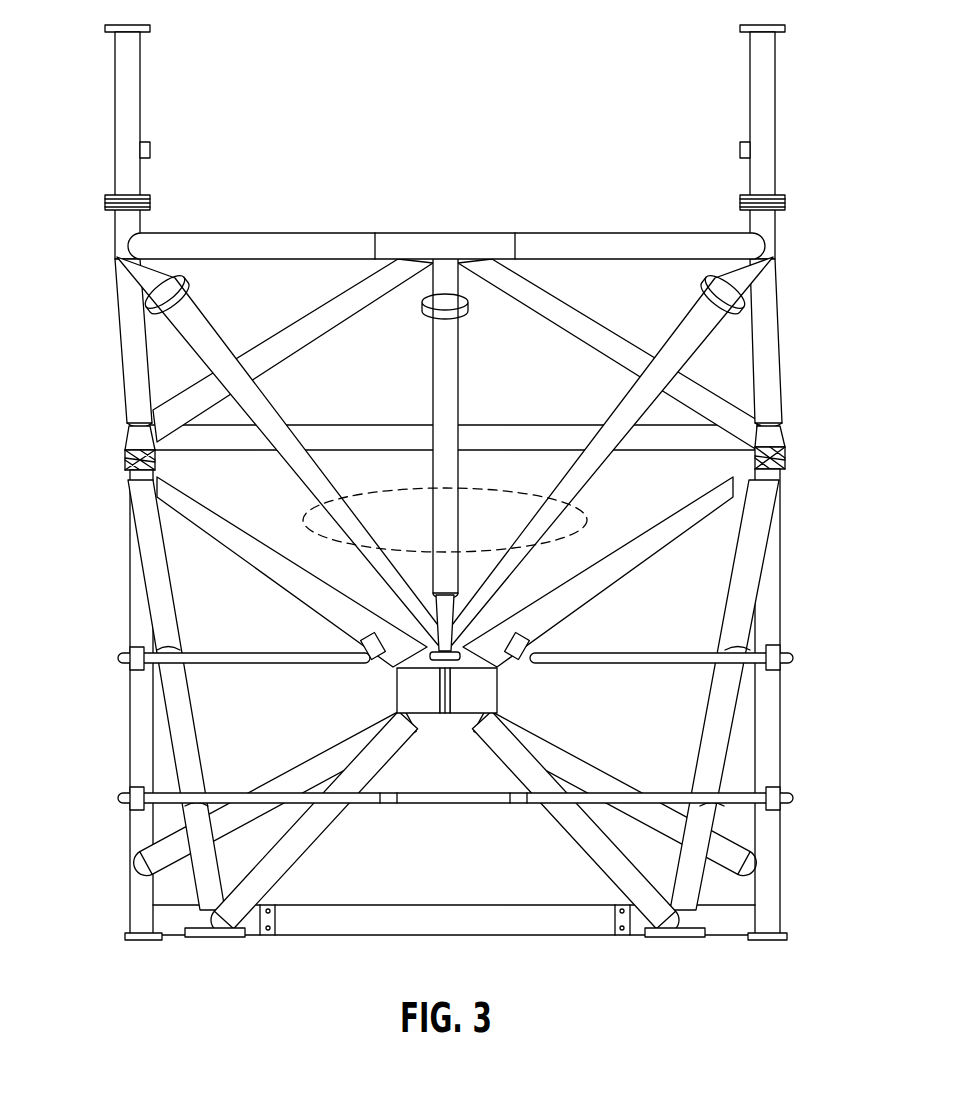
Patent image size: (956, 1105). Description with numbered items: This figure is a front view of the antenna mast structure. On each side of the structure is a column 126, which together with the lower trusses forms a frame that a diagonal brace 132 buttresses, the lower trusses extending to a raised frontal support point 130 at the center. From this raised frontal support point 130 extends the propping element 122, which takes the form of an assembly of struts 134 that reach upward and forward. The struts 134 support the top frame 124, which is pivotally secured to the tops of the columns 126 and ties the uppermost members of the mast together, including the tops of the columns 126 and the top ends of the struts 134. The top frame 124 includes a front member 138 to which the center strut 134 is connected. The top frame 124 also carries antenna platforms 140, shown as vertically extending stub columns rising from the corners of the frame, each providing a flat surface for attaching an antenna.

The propping element 122 is at (588, 520).
The top frame 124 is at (107, 234).
The column 126 is at (128, 729).
The raised frontal support point 130 is at (500, 688).
The diagonal brace 132 is at (200, 737).
The strut 134 is at (688, 318).
The front member 138 is at (630, 233).
The antenna platform 140 is at (115, 228).